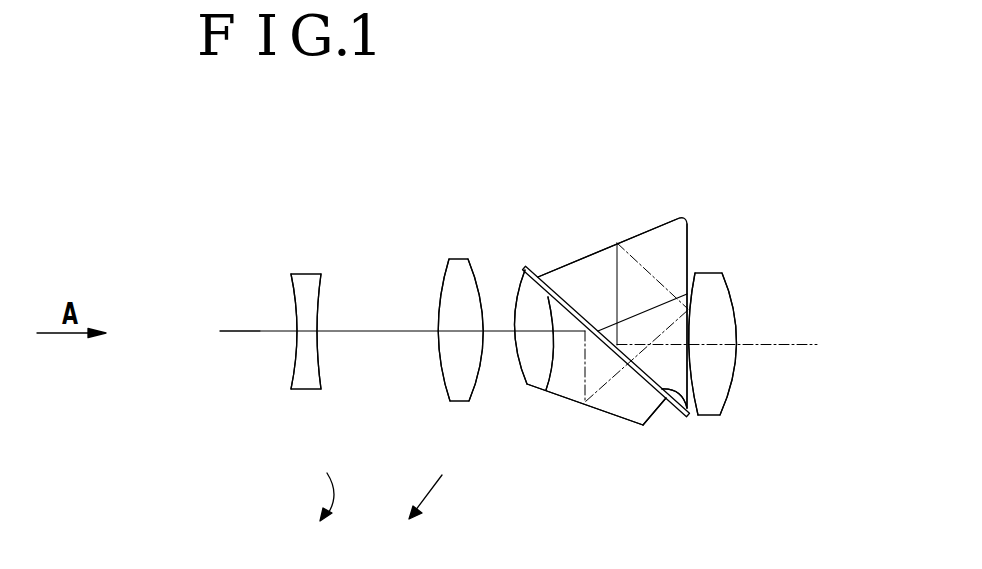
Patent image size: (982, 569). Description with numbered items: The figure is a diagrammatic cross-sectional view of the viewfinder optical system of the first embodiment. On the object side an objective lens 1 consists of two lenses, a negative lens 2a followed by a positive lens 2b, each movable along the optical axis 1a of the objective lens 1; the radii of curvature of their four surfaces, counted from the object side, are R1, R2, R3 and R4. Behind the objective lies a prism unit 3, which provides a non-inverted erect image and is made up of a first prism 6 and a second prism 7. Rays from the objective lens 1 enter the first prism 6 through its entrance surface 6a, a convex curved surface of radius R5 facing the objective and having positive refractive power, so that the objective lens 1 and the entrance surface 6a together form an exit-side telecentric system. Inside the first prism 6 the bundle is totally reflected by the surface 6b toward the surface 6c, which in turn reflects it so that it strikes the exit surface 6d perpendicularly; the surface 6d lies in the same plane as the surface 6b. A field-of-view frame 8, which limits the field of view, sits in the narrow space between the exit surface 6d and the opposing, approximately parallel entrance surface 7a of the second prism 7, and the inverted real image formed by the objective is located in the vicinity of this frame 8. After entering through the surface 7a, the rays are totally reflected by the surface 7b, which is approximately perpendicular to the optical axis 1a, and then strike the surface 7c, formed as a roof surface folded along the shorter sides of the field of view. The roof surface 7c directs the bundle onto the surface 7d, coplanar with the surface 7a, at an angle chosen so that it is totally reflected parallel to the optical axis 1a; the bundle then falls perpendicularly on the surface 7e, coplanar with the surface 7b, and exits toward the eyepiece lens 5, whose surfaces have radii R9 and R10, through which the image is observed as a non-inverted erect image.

The objective lens 1 is at (510, 166).
The optical axis 1a is at (240, 333).
The negative lens 2a is at (307, 283).
The positive lens 2b is at (458, 272).
The prism unit 3 is at (698, 146).
The eyepiece lens 5 is at (720, 307).
The first prism 6 is at (573, 392).
The entrance surface 6a is at (531, 384).
The surface 6b is at (546, 390).
The surface 6c is at (636, 427).
The exit surface 6d is at (627, 387).
The second prism 7 is at (670, 233).
The entrance surface 7a is at (721, 448).
The surface 7b is at (743, 297).
The roof surface 7c is at (636, 230).
The surface 7d is at (693, 405).
The surface 7e is at (688, 250).
The field-of-view frame 8 is at (538, 268).
The radius of curvature of first lens surface R1 is at (292, 364).
The radius of curvature of second lens surface R2 is at (323, 364).
The radius of curvature of third lens surface R3 is at (440, 358).
The radius of curvature of fourth lens surface R4 is at (483, 357).
The radius of curvature of fifth lens surface R5 is at (517, 350).
The radius of curvature of ninth lens surface R9 is at (693, 407).
The radius of curvature of tenth lens surface R10 is at (737, 363).